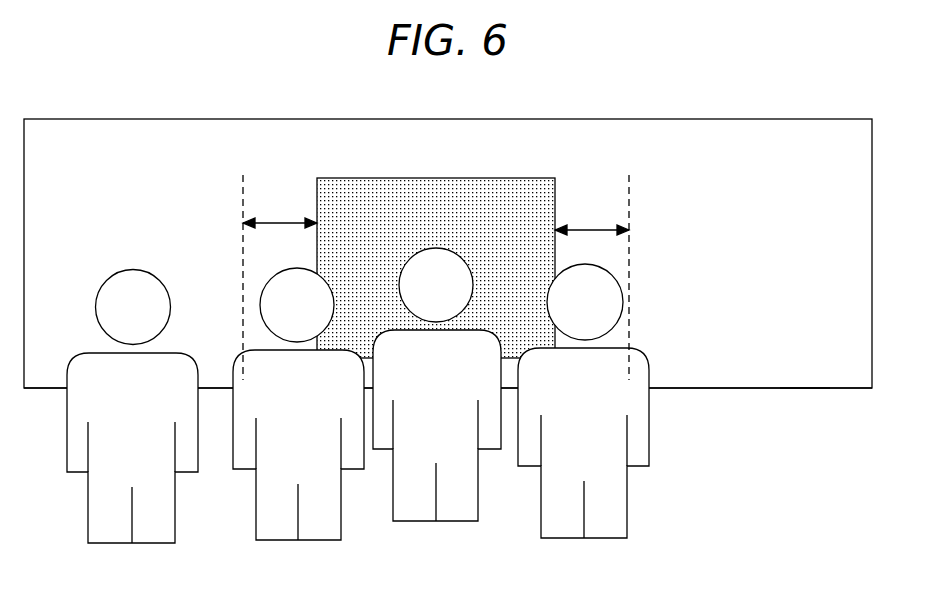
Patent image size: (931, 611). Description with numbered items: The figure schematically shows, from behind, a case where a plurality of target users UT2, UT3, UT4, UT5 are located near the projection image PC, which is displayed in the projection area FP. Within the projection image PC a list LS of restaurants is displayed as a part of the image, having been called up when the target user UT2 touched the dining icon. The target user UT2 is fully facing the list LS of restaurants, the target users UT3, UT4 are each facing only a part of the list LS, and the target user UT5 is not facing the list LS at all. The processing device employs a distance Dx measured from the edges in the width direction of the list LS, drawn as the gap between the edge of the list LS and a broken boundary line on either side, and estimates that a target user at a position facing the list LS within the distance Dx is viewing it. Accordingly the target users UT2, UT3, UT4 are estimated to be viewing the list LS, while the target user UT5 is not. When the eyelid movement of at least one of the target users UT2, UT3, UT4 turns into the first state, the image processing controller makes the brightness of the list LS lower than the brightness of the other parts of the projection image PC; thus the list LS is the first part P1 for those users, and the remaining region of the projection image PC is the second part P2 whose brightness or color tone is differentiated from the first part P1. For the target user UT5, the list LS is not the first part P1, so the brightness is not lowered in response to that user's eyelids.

The second part P2 is at (723, 190).
The first part P1 is at (436, 218).
The list of restaurants LS is at (470, 195).
The projection area FP is at (719, 389).
The projection image PC is at (804, 363).
The distance Dx is at (436, 277).
The target user UT2 is at (458, 502).
The target user UT3 is at (610, 520).
The target user UT4 is at (324, 520).
The target user UT5 is at (152, 530).